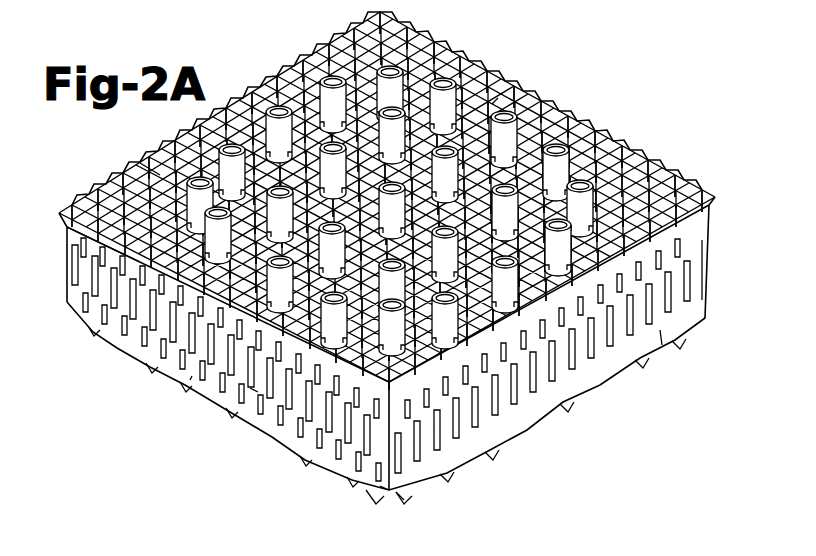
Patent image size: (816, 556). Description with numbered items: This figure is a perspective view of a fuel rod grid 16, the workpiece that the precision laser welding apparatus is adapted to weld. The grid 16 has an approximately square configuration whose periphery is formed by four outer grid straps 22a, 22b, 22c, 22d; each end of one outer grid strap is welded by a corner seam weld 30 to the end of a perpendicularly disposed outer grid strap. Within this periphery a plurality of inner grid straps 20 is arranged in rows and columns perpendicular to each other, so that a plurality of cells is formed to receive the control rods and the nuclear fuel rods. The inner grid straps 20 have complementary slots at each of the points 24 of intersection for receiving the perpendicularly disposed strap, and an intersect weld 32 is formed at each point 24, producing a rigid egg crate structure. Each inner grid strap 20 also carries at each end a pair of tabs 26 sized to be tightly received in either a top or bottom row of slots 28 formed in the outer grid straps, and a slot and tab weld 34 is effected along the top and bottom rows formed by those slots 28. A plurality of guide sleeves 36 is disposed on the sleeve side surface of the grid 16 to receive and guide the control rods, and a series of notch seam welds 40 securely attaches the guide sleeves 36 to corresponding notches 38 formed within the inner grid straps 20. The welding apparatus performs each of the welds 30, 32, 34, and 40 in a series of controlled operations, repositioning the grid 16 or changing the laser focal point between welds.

The fuel rod grid 16 is at (603, 119).
The inner grid strap 20 is at (636, 150).
The outer grid strap 22a is at (628, 372).
The outer grid strap 22b is at (249, 92).
The outer grid strap 22c is at (425, 35).
The outer grid strap 22d is at (190, 385).
The point of intersection 24 is at (186, 201).
The tab 26 is at (705, 275).
The slot 28 is at (665, 345).
The corner seam weld 30 is at (385, 492).
The intersect weld 32 is at (135, 230).
The slot and tab weld 34 is at (400, 498).
The guide sleeve 36 is at (150, 158).
The notch 38 is at (255, 390).
The notch seam weld 40 is at (498, 98).